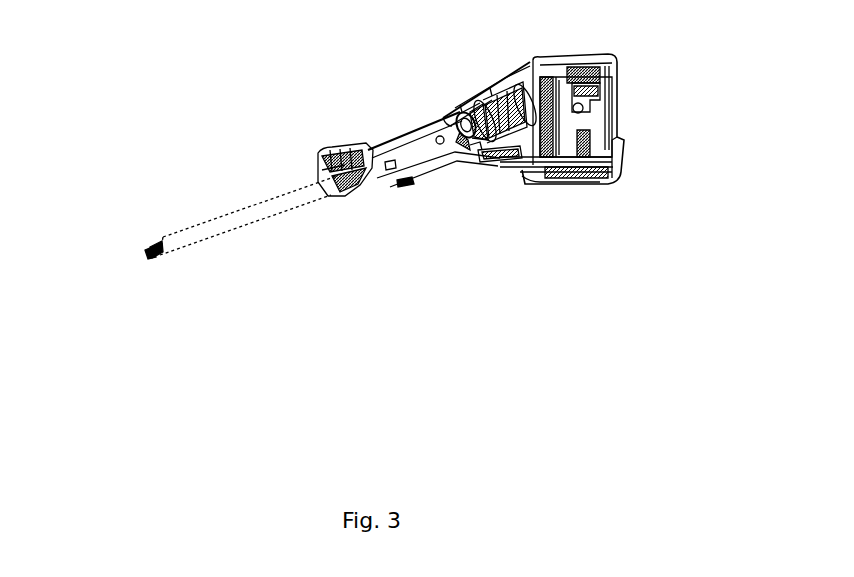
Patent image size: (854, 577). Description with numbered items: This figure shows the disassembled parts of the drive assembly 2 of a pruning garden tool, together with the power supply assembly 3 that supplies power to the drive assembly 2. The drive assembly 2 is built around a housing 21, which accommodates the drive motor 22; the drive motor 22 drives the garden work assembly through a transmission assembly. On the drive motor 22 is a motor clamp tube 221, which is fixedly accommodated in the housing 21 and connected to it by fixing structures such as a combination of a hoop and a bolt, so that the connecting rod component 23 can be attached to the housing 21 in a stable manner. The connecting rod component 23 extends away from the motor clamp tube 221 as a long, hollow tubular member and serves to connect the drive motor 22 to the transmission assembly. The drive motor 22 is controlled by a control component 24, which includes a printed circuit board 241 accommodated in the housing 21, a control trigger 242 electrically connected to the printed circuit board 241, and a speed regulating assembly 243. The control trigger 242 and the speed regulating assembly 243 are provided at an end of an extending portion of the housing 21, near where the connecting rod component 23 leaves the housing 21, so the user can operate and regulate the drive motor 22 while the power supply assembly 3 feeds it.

The drive assembly 2 is at (88, 36).
The power supply assembly 3 is at (612, 108).
The housing 21 is at (612, 178).
The drive motor 22 is at (528, 63).
The motor clamp tube 221 is at (470, 112).
The connecting rod component 23 is at (178, 232).
The control component 24 is at (518, 260).
The printed circuit board 241 is at (514, 185).
The control trigger 242 is at (402, 183).
The speed regulating assembly 243 is at (334, 186).